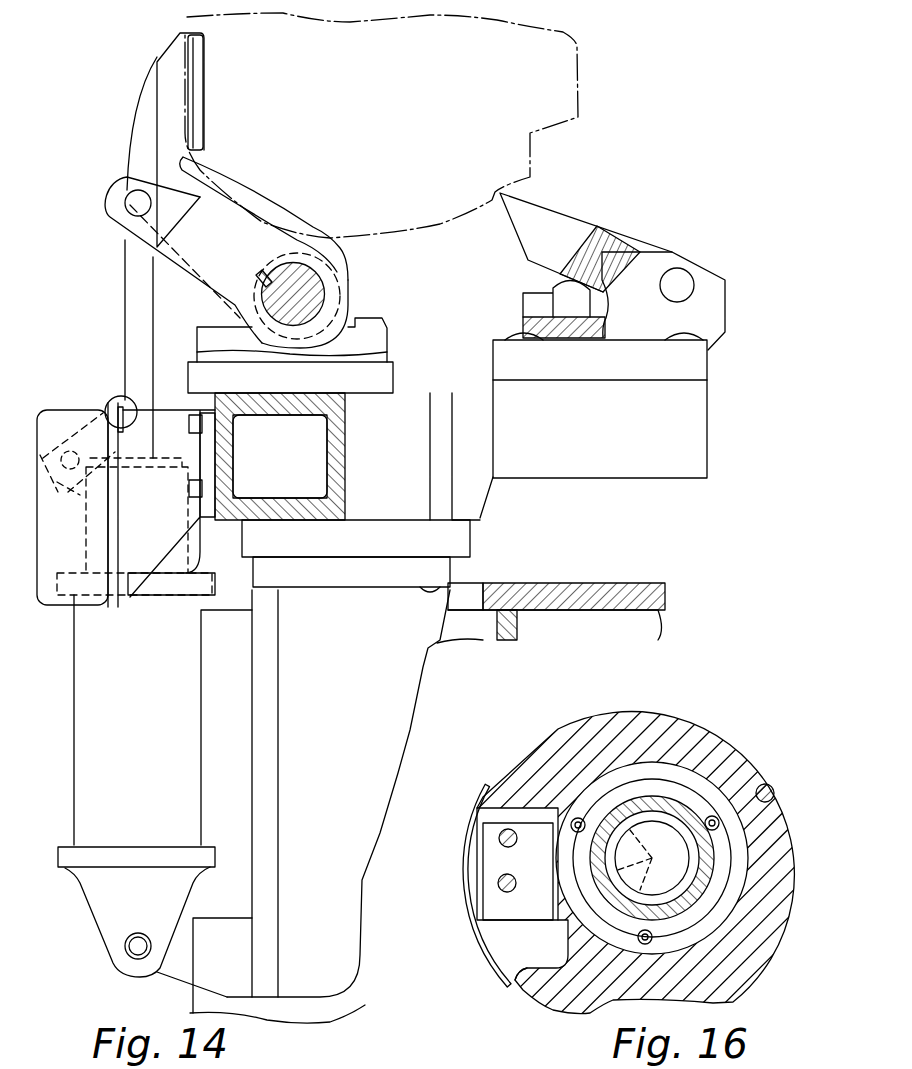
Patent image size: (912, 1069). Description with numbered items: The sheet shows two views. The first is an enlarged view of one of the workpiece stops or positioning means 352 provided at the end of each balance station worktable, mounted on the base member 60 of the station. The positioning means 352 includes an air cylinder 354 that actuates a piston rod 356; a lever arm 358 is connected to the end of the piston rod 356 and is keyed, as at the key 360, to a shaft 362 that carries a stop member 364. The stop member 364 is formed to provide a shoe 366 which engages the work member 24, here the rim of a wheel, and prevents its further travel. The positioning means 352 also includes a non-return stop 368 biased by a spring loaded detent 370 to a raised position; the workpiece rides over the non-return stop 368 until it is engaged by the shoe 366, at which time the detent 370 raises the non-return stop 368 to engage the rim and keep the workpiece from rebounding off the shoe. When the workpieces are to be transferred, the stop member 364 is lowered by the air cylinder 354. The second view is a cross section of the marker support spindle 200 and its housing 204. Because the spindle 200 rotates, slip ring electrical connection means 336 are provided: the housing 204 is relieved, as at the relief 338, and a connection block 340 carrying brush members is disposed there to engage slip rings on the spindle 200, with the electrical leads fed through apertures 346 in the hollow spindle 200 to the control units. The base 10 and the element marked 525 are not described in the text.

In FIG. 14, the base housing 10 is at (308, 1024).
In FIG. 14, the work member 24 is at (541, 136).
In FIG. 14, the base member 60 is at (286, 715).
In FIG. 16, the marker support spindle 200 is at (658, 809).
In FIG. 16, the marker support spindle housing 204 is at (749, 753).
In FIG. 16, the slip ring electrical connection means 336 is at (479, 941).
In FIG. 16, the relief 338 is at (534, 962).
In FIG. 16, the connection block 340 is at (515, 906).
In FIG. 16, the apertures 346 is at (652, 858).
In FIG. 14, the workpiece stop or positioning means 352 is at (141, 113).
In FIG. 14, the air cylinder 354 is at (71, 853).
In FIG. 14, the piston rod 356 is at (136, 328).
In FIG. 14, the lever arm 358 is at (201, 286).
In FIG. 14, the key 360 is at (262, 276).
In FIG. 14, the shaft 362 is at (320, 291).
In FIG. 14, the stop member 364 is at (129, 161).
In FIG. 14, the shoe 366 is at (206, 136).
In FIG. 14, the non-return stop 368 is at (580, 239).
In FIG. 14, the spring loaded detent 370 is at (556, 299).
In FIG. 14, the valve bracket 525 is at (50, 419).